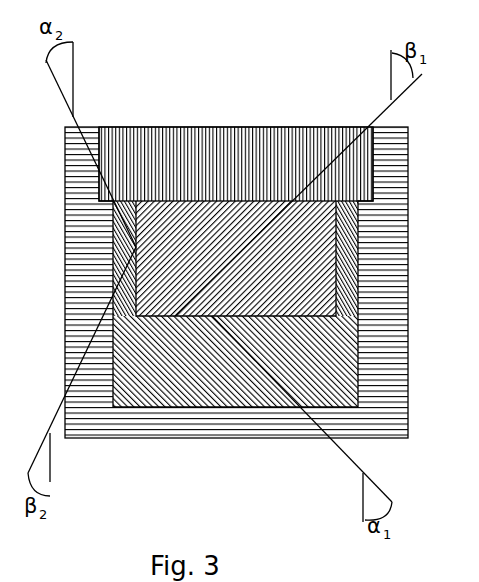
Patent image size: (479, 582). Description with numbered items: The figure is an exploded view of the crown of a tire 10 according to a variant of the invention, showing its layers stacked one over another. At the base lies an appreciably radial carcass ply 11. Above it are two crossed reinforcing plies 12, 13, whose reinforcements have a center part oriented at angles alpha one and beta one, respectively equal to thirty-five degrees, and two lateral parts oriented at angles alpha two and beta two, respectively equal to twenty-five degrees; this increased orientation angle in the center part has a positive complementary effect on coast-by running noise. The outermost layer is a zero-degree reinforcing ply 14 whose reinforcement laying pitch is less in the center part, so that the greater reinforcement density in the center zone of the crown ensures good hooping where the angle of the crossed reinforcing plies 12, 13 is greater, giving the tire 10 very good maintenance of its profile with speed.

The tire 10 is at (132, 456).
The radial carcass ply 11 is at (278, 405).
The crossed reinforcing ply 12 is at (273, 358).
The crossed reinforcing ply 13 is at (283, 275).
The 0° reinforcing ply 14 is at (205, 173).